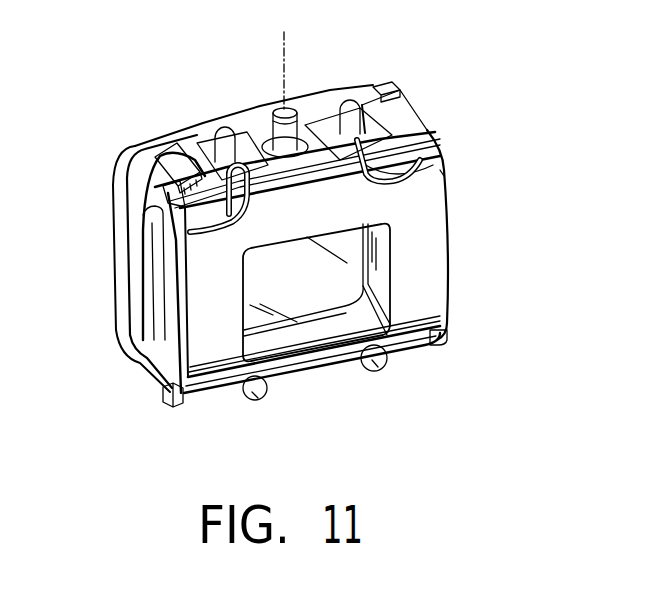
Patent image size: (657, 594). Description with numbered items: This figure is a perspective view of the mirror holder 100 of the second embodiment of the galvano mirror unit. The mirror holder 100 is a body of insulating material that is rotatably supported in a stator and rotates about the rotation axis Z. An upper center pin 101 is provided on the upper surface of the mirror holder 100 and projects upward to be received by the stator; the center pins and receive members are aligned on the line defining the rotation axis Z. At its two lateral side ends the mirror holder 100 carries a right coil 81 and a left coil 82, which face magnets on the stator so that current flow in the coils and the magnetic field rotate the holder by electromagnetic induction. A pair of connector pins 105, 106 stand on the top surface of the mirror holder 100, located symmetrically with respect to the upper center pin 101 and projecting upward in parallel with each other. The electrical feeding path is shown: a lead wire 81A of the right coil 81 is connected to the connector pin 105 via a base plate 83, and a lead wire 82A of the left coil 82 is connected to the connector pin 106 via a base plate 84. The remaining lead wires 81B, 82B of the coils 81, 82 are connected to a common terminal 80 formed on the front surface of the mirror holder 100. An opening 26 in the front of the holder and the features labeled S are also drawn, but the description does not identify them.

The mirror holder 100 is at (418, 208).
The common terminal 80 is at (318, 380).
The right coil 81 is at (412, 118).
The lead wire of right coil 81A is at (374, 181).
The lead wire of right coil 81B is at (422, 352).
The left coil 82 is at (140, 192).
The lead wire of left coil 82A is at (238, 210).
The lead wire of left coil 82B is at (210, 400).
The base plate 83 is at (399, 102).
The base plate 84 is at (165, 138).
The window opening 26 is at (332, 283).
The screw S is at (258, 398).
The upper center pin 101 is at (278, 108).
The rotation axis Z is at (287, 59).
The connector pin 105 is at (345, 100).
The connector pin 106 is at (225, 126).